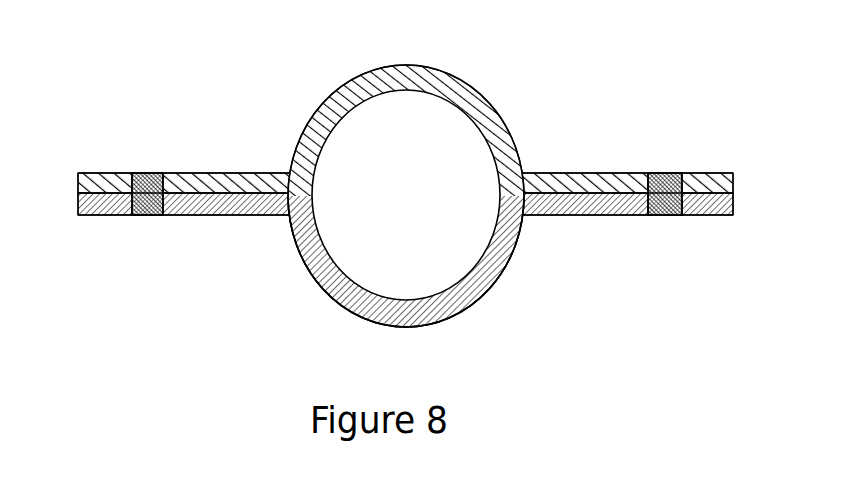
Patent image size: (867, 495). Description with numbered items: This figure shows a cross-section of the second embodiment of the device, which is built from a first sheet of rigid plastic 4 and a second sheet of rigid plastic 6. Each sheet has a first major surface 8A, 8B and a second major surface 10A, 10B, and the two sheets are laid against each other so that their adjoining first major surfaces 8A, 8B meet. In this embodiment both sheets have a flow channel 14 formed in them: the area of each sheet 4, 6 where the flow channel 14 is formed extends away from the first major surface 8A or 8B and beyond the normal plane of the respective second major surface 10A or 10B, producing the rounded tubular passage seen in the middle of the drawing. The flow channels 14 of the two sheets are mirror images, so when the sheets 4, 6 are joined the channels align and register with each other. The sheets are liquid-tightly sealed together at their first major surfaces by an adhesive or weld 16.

The first sheet of rigid plastic 4 is at (495, 105).
The second sheet of rigid plastic 6 is at (477, 290).
The first major surface 8A is at (692, 172).
The first major surface 8B is at (710, 217).
The second major surface 10A is at (113, 172).
The second major surface 10B is at (102, 215).
The flow channel 14 is at (367, 150).
The adhesive or weld 16 is at (153, 172).